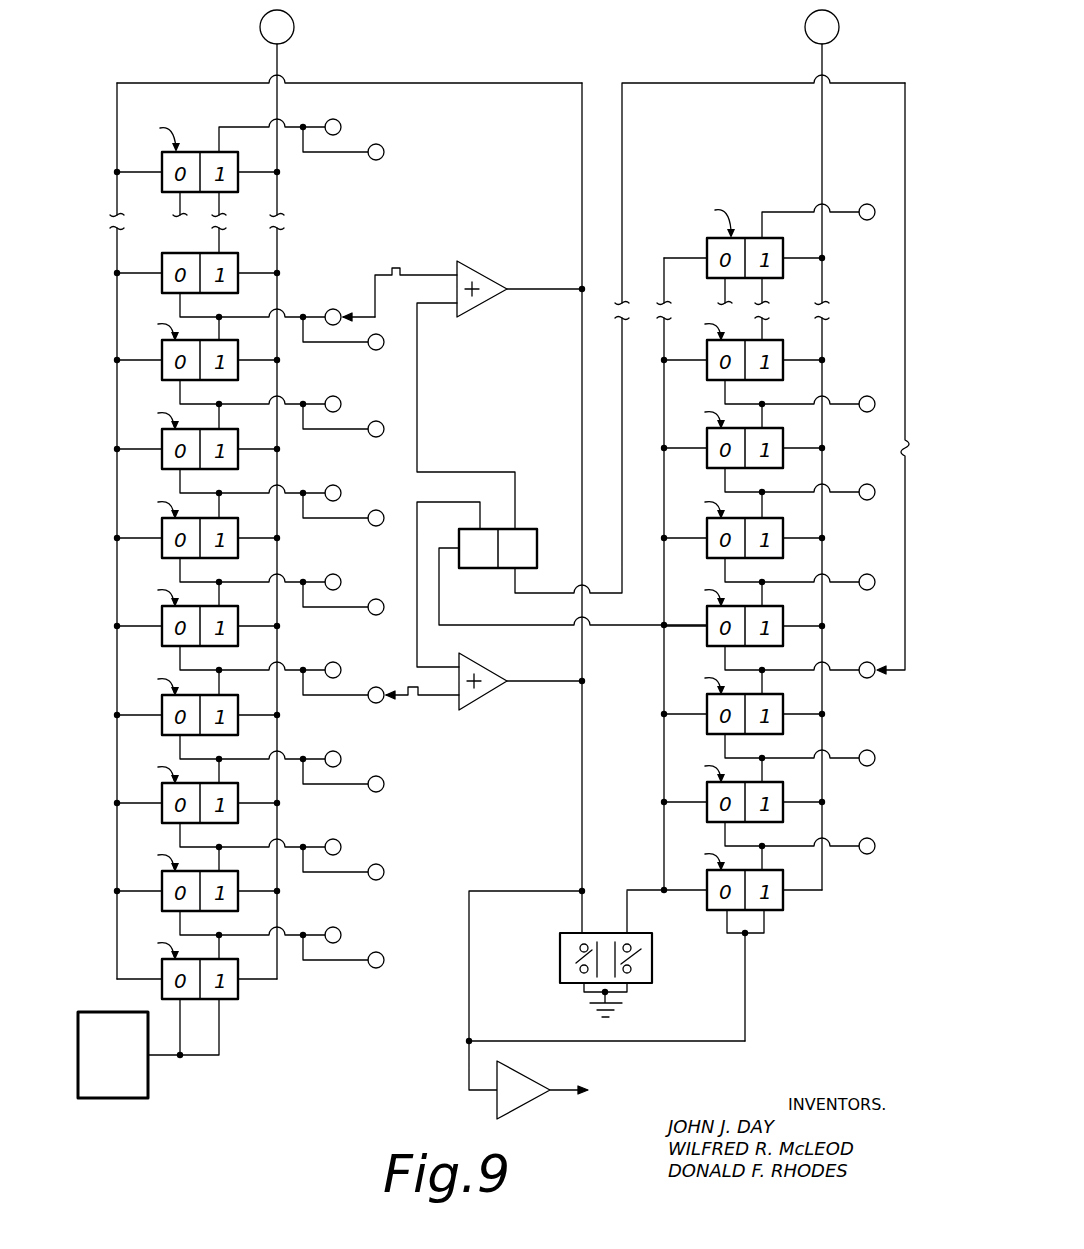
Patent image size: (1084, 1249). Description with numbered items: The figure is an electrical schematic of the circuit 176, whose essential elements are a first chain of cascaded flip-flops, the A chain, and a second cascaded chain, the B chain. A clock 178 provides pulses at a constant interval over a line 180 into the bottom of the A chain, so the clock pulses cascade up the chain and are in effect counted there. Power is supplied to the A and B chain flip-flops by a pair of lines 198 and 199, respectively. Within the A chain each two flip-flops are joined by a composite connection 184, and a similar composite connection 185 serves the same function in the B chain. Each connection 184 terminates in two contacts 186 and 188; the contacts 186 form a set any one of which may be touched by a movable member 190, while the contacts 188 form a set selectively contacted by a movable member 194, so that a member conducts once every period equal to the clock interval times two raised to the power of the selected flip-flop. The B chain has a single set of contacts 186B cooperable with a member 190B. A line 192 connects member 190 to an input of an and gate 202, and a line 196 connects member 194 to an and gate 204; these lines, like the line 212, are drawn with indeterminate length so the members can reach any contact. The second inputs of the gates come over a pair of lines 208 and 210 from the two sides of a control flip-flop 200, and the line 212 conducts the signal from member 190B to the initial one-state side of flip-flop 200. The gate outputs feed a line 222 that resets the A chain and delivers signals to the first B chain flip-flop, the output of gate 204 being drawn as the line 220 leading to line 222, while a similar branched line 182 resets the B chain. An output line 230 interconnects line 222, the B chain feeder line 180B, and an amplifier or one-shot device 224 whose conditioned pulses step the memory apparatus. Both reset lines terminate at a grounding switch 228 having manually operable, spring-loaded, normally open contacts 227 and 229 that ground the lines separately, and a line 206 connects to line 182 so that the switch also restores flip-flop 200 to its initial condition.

The circuit 176 is at (115, 343).
The clock 178 is at (115, 1098).
The line 180 is at (170, 1058).
The B chain feeder line 180B is at (745, 985).
The line 182 is at (664, 757).
The composite connection 184 is at (244, 127).
The composite connection 185 is at (768, 757).
The contact 186 is at (342, 759).
The contact 186B is at (867, 677).
The contact 188 is at (384, 784).
The movable member 190 is at (350, 310).
The movable member 190B is at (902, 660).
The line 192 is at (434, 275).
The movable member 194 is at (389, 702).
The line 196 is at (441, 698).
The line 198 is at (275, 58).
The line 199 is at (822, 158).
The control flip-flop 200 is at (556, 509).
The and gate 202 is at (480, 267).
The and gate 204 is at (478, 665).
The line 206 is at (602, 627).
The line 208 is at (417, 375).
The line 210 is at (417, 549).
The line 212 is at (622, 158).
The line 220 is at (528, 683).
The line 222 is at (117, 432).
The amplifier 224 is at (525, 1083).
The contact 227 is at (568, 960).
The grounding switch 228 is at (657, 969).
The contact 229 is at (640, 950).
The output line 230 is at (505, 893).